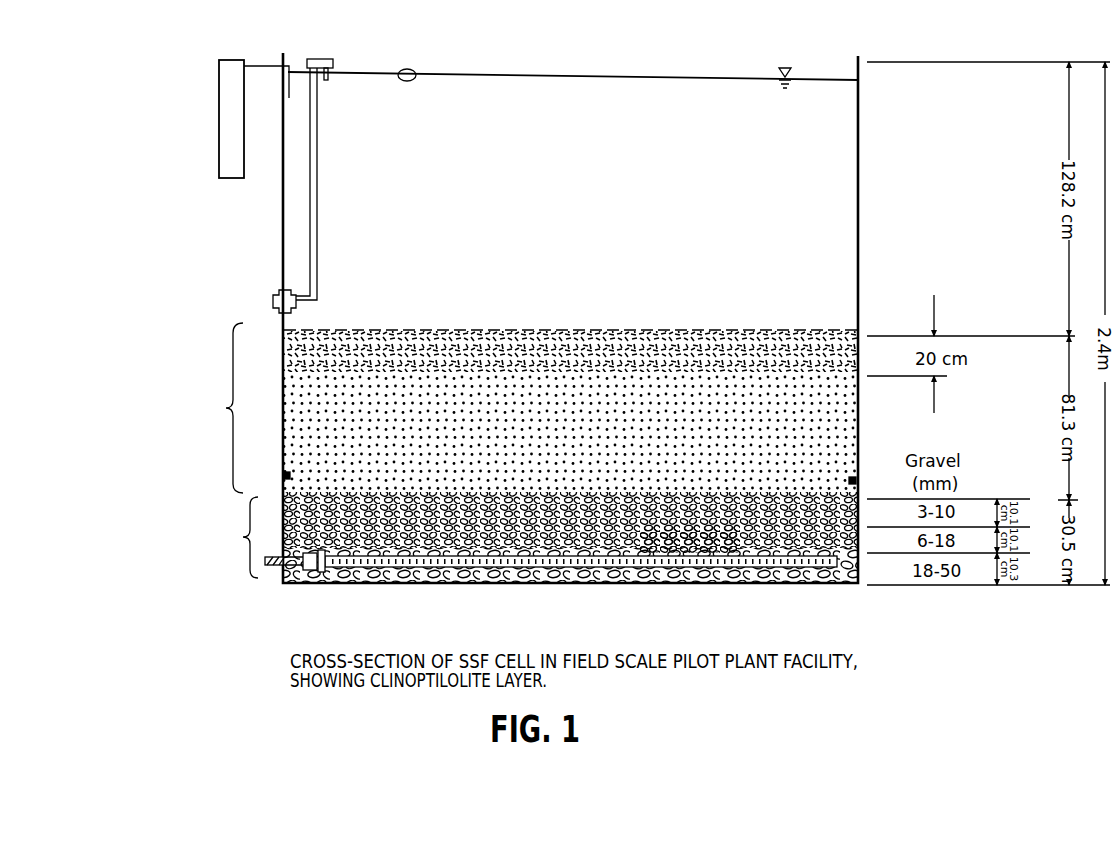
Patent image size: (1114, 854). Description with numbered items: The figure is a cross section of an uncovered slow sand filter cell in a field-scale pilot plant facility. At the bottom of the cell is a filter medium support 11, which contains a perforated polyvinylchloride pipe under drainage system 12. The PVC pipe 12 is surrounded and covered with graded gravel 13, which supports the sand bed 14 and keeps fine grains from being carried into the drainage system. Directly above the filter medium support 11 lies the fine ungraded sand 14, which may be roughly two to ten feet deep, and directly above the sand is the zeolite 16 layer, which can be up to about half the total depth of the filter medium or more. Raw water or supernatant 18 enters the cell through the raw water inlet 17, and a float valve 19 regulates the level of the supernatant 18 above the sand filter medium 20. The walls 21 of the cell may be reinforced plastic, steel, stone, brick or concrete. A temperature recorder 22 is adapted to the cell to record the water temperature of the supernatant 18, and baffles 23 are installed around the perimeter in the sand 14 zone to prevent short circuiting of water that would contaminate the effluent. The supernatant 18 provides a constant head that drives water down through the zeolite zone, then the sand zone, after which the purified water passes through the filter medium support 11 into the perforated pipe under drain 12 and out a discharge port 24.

The filter medium support 11 is at (541, 537).
The perforated PVC pipe under drainage system 12 is at (537, 582).
The graded gravel 13 is at (690, 520).
The sand bed 14 is at (507, 411).
The zeolite layer 16 is at (712, 358).
The raw water inlet 17 is at (318, 55).
The supernatant 18 is at (533, 120).
The float valve 19 is at (405, 68).
The sand filter medium 20 is at (531, 408).
The walls 21 is at (268, 255).
The temperature recorder 22 is at (218, 103).
The baffles 23 is at (279, 477).
The discharge port 24 is at (261, 574).